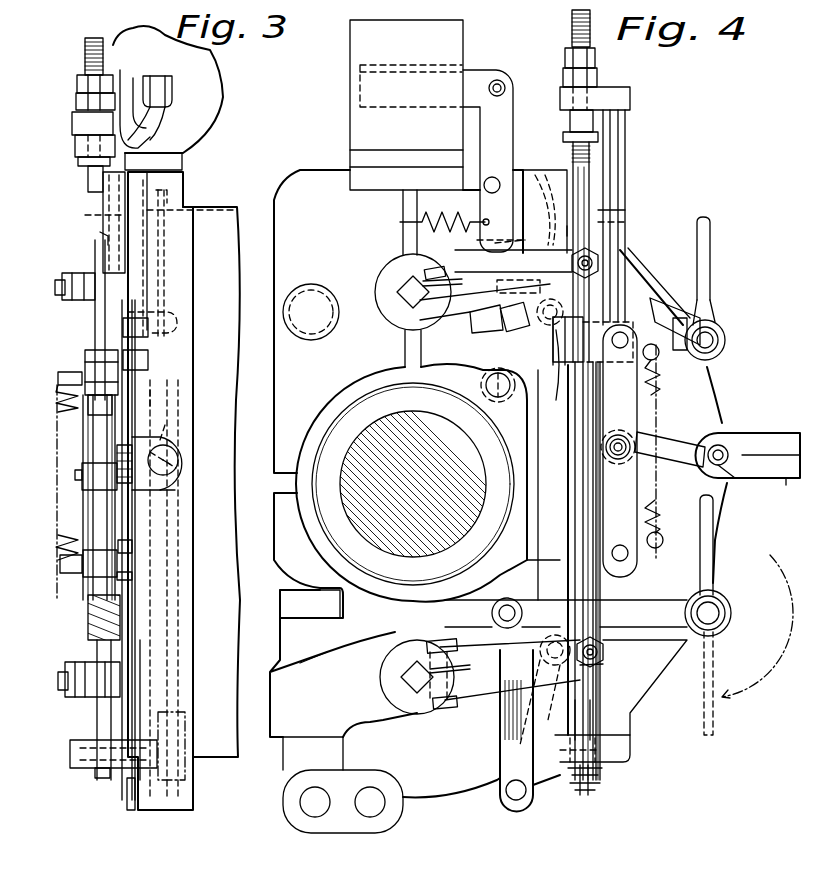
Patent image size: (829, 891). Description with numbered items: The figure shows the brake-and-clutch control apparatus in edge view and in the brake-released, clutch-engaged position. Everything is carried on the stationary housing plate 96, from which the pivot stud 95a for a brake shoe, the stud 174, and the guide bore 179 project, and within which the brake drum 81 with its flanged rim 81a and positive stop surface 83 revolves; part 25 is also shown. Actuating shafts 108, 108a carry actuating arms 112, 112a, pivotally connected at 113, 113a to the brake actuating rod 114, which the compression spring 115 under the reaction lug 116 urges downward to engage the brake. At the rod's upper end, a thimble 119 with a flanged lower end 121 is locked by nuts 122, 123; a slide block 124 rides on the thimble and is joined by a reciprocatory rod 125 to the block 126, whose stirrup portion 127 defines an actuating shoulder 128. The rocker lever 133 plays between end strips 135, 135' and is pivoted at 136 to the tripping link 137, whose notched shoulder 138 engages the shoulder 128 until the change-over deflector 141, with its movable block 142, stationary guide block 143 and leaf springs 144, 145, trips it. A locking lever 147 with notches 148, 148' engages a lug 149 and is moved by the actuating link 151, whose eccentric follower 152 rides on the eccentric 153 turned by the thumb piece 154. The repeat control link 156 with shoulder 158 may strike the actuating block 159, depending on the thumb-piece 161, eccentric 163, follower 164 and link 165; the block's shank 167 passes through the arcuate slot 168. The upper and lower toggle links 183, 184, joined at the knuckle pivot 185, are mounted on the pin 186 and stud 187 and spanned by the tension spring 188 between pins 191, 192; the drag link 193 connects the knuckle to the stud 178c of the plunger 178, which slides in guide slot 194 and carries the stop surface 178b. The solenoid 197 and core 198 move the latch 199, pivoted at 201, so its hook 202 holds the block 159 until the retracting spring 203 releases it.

In FIG. 4, the spindle housing 25 is at (380, 435).
In FIG. 3, the brake drum 81 is at (222, 232).
In FIG. 3, the flanged rim 81a is at (165, 402).
In FIG. 3, the positive stop surface 83 is at (170, 428).
In FIG. 4, the stationary pivot stud 95a is at (306, 290).
In FIG. 3, the housing plate 96 is at (183, 190).
In FIG. 4, the housing plate 96 is at (300, 184).
In FIG. 4, the actuating shaft 108 is at (402, 285).
In FIG. 4, the actuating shaft 108a is at (400, 680).
In FIG. 3, the actuating arm 112 is at (62, 280).
In FIG. 4, the actuating arm 112 is at (430, 308).
In FIG. 3, the actuating arm 112a is at (70, 675).
In FIG. 4, the actuating arm 112a is at (488, 690).
In FIG. 3, the pivotal connection 113 is at (55, 290).
In FIG. 4, the pivotal connection 113 is at (600, 262).
In FIG. 3, the pivotal connection 113a is at (62, 690).
In FIG. 4, the pivotal connection 113a is at (605, 652).
In FIG. 3, the brake actuating rod 114 is at (88, 180).
In FIG. 4, the brake actuating rod 114 is at (590, 725).
In FIG. 4, the compression spring 115 is at (602, 780).
In FIG. 3, the reaction lug 116 is at (72, 123).
In FIG. 4, the reaction lug 116 is at (630, 750).
In FIG. 3, the thimble 119 is at (131, 80).
In FIG. 4, the thimble 119 is at (570, 120).
In FIG. 4, the flanged lower end 121 is at (563, 136).
In FIG. 3, the nut 122 is at (77, 92).
In FIG. 4, the nut 122 is at (597, 72).
In FIG. 3, the nut 123 is at (80, 72).
In FIG. 4, the nut 123 is at (572, 36).
In FIG. 3, the slide block 124 is at (75, 145).
In FIG. 4, the slide block 124 is at (620, 92).
In FIG. 3, the reciprocatory rod 125 is at (78, 161).
In FIG. 4, the reciprocatory rod 125 is at (625, 128).
In FIG. 3, the block 126 is at (85, 365).
In FIG. 4, the block 126 is at (628, 320).
In FIG. 3, the stirrup portion 127 is at (100, 405).
In FIG. 4, the stirrup portion 127 is at (553, 340).
In FIG. 4, the actuating shoulder 128 is at (598, 385).
In FIG. 3, the rocker lever 133 is at (140, 700).
In FIG. 4, the rocker lever 133 is at (315, 668).
In FIG. 4, the end strip 135 is at (310, 616).
In FIG. 4, the end strip 135' is at (343, 780).
In FIG. 4, the pivot stud 136 is at (558, 665).
In FIG. 3, the tripping link 137 is at (97, 265).
In FIG. 4, the tripping link 137 is at (572, 540).
In FIG. 4, the notched shoulder 138 is at (560, 380).
In FIG. 3, the change-over deflector 141 is at (93, 210).
In FIG. 4, the change-over deflector 141 is at (575, 234).
In FIG. 3, the movable deflector block 142 is at (100, 236).
In FIG. 4, the movable deflector block 142 is at (548, 175).
In FIG. 3, the stationary guide block 143 is at (85, 215).
In FIG. 4, the stationary guide block 143 is at (598, 222).
In FIG. 4, the leaf spring 144 is at (598, 210).
In FIG. 4, the leaf spring 145 is at (501, 238).
In FIG. 3, the locking lever 147 is at (131, 810).
In FIG. 4, the locking lever 147 is at (500, 770).
In FIG. 4, the locking notch 148 is at (489, 716).
In FIG. 4, the locking notch 148' is at (483, 613).
In FIG. 4, the lug 149 is at (550, 702).
In FIG. 4, the actuating link 151 is at (645, 625).
In FIG. 4, the eccentric follower portion 152 is at (731, 620).
In FIG. 4, the eccentric 153 is at (748, 645).
In FIG. 3, the pivoted thumb piece 154 is at (90, 595).
In FIG. 4, the pivoted thumb piece 154 is at (713, 565).
In FIG. 3, the repeat control link 156 is at (127, 400).
In FIG. 4, the repeat control link 156 is at (633, 268).
In FIG. 4, the actuating shoulder 158 is at (505, 330).
In FIG. 3, the actuating block 159 is at (123, 333).
In FIG. 4, the actuating block 159 is at (498, 338).
In FIG. 4, the thumb-piece 161 is at (710, 232).
In FIG. 4, the eccentric 163 is at (743, 456).
In FIG. 4, the eccentric follower 164 is at (726, 335).
In FIG. 4, the link 165 is at (700, 302).
In FIG. 3, the shank portion 167 is at (178, 305).
In FIG. 4, the arcuate slot 168 is at (440, 282).
In FIG. 4, the stud 174 is at (486, 388).
In FIG. 3, the plunger 178 is at (182, 462).
In FIG. 4, the plunger 178 is at (748, 435).
In FIG. 3, the positive stop surface 178b is at (165, 455).
In FIG. 4, the stud 178c is at (722, 472).
In FIG. 3, the guide bore 179 is at (185, 480).
In FIG. 4, the guide bore 179 is at (786, 485).
In FIG. 3, the upper toggle link 183 is at (83, 440).
In FIG. 4, the upper toggle link 183 is at (605, 418).
In FIG. 3, the lower toggle link 184 is at (88, 492).
In FIG. 4, the lower toggle link 184 is at (600, 492).
In FIG. 3, the knuckle pivot 185 is at (75, 475).
In FIG. 4, the knuckle pivot 185 is at (635, 447).
In FIG. 4, the pin 186 is at (656, 287).
In FIG. 4, the stationary pivot stud 187 is at (620, 561).
In FIG. 3, the tension spring 188 is at (58, 548).
In FIG. 4, the tension spring 188 is at (658, 396).
In FIG. 3, the pin 191 is at (58, 378).
In FIG. 4, the pin 191 is at (660, 370).
In FIG. 3, the pin 192 is at (62, 567).
In FIG. 4, the pin 192 is at (657, 549).
In FIG. 3, the drag link 193 is at (135, 498).
In FIG. 4, the drag link 193 is at (685, 470).
In FIG. 4, the guide slot 194 is at (772, 445).
In FIG. 3, the solenoid 197 is at (222, 92).
In FIG. 4, the solenoid 197 is at (455, 25).
In FIG. 3, the solenoid core 198 is at (215, 70).
In FIG. 4, the solenoid core 198 is at (470, 68).
In FIG. 3, the latch 199 is at (165, 108).
In FIG. 4, the latch 199 is at (513, 100).
In FIG. 4, the pivot 201 is at (485, 188).
In FIG. 4, the hook 202 is at (536, 305).
In FIG. 4, the retracting spring 203 is at (425, 220).